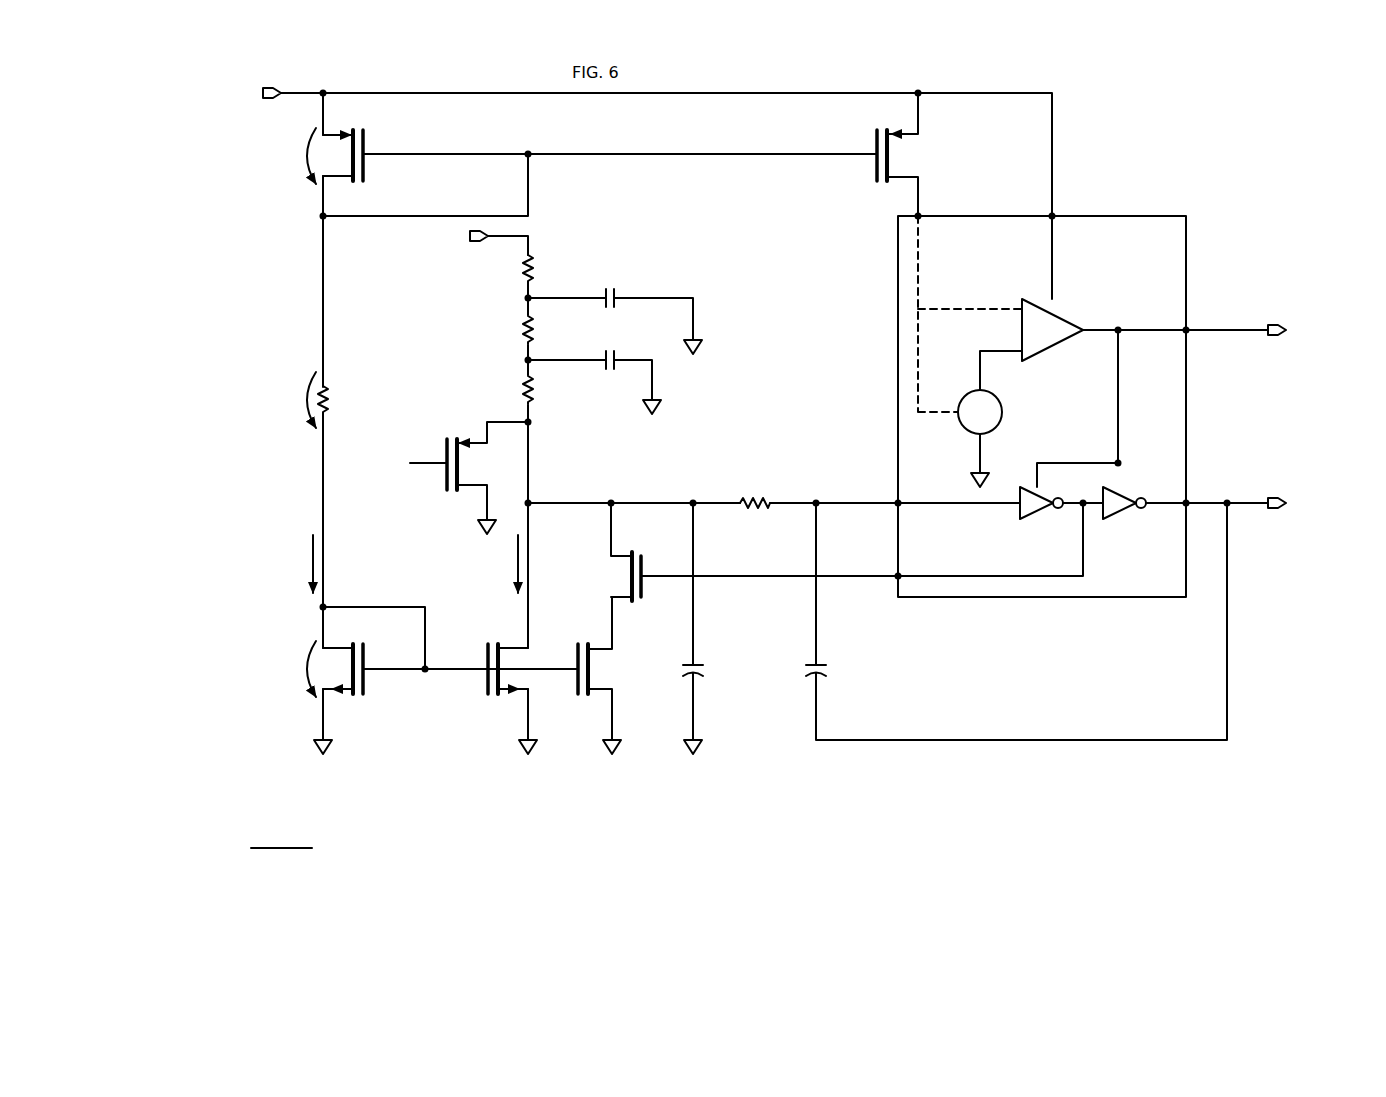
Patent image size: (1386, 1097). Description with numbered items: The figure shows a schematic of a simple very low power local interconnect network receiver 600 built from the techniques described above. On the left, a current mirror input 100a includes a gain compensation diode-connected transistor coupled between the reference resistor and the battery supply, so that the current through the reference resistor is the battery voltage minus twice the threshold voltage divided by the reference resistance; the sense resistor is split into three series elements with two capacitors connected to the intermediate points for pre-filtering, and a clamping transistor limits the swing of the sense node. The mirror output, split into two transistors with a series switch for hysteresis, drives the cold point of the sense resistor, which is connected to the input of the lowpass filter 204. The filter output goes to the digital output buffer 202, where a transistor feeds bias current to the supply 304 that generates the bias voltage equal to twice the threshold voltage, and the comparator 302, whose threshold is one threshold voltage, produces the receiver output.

The LIN receiver 600 is at (1192, 121).
The current mirror input 100a is at (414, 754).
The digital output buffer 202 is at (1117, 629).
The lowpass filter 204 is at (850, 764).
The comparator 302 is at (1136, 509).
The supply 304 is at (1025, 384).